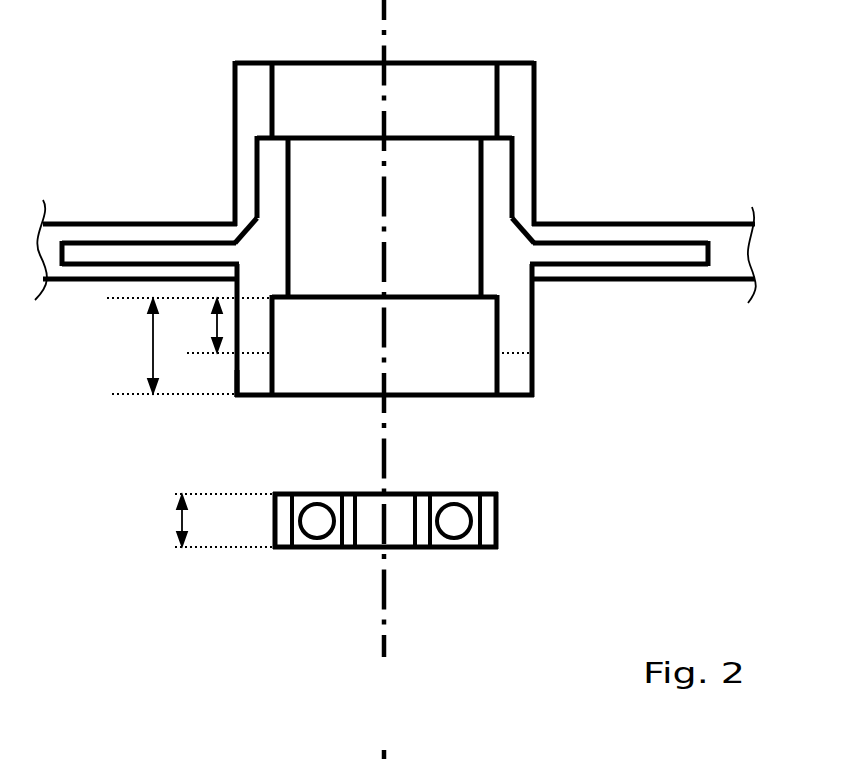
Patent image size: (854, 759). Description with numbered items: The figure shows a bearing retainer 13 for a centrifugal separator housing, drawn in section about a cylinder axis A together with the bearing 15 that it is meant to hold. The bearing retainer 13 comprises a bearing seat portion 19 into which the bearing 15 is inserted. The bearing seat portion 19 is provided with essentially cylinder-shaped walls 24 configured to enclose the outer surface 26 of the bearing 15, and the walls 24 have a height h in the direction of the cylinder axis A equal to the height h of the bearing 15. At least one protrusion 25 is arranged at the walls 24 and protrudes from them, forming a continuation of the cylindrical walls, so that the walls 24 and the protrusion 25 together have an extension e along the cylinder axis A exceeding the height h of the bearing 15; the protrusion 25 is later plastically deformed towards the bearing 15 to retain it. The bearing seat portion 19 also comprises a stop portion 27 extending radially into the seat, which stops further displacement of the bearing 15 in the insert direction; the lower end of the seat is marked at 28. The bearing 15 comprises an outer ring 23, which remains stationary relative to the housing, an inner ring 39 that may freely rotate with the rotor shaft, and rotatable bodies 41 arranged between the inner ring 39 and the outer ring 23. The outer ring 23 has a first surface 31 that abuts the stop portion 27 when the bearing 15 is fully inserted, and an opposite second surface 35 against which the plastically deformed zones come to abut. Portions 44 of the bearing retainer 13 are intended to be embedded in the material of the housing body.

The bearing retainer 13 is at (395, 233).
The bearing 15 is at (224, 619).
The bearing seat portion 19 is at (378, 273).
The outer ring 23 is at (389, 525).
The walls 24 is at (258, 333).
The protrusion 25 is at (253, 375).
The outer surface 26 is at (272, 523).
The stop portion 27 is at (488, 302).
The bottom end of hub 28 is at (483, 400).
The first surface 31 is at (286, 493).
The second surface 35 is at (285, 550).
The inner ring 39 is at (420, 508).
The rotatable bodies 41 is at (453, 525).
The portions of the bearing retainer 44 is at (107, 257).
The cylinder axis A is at (384, 643).